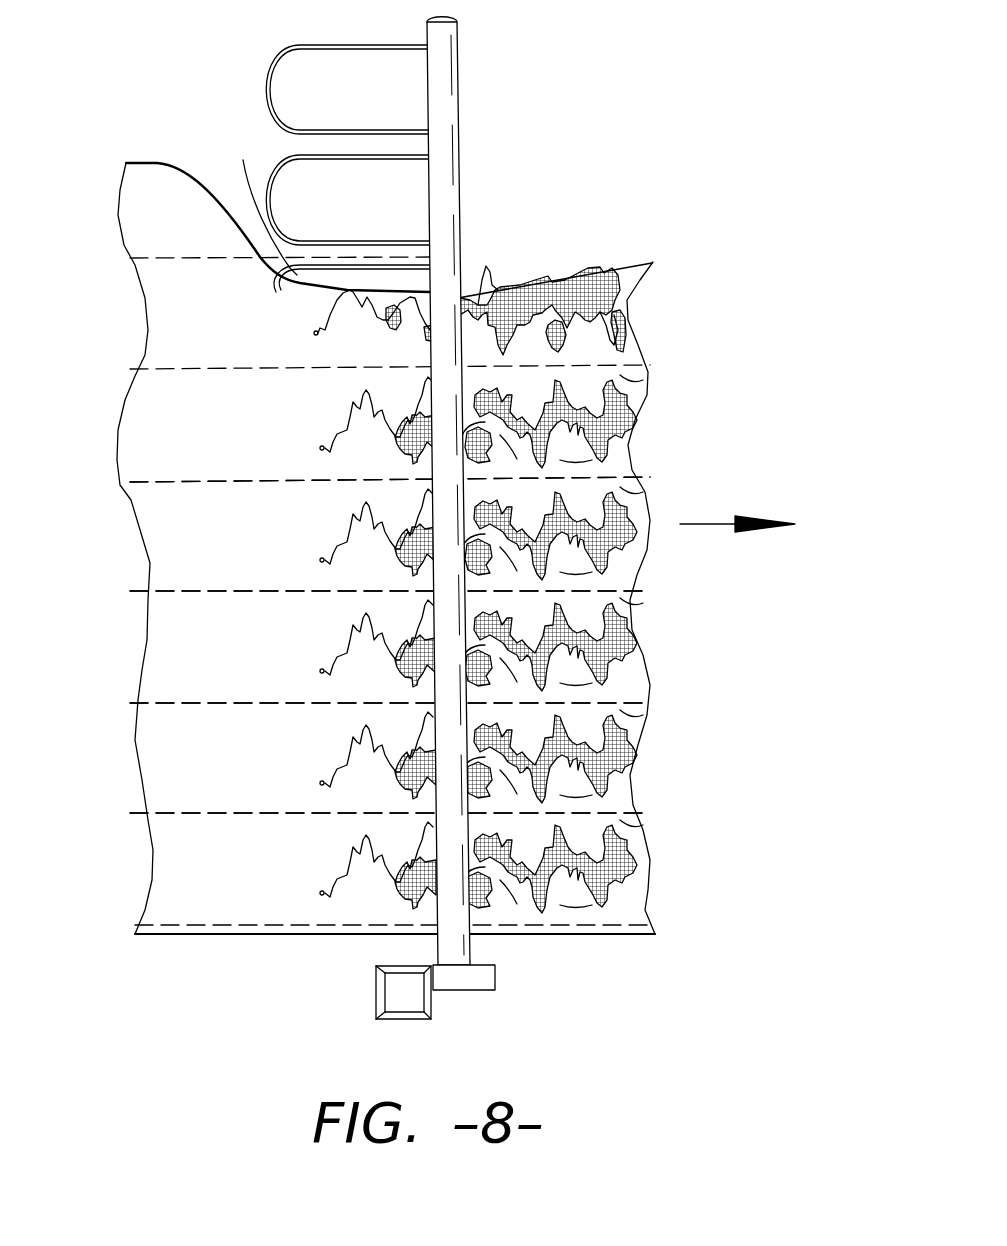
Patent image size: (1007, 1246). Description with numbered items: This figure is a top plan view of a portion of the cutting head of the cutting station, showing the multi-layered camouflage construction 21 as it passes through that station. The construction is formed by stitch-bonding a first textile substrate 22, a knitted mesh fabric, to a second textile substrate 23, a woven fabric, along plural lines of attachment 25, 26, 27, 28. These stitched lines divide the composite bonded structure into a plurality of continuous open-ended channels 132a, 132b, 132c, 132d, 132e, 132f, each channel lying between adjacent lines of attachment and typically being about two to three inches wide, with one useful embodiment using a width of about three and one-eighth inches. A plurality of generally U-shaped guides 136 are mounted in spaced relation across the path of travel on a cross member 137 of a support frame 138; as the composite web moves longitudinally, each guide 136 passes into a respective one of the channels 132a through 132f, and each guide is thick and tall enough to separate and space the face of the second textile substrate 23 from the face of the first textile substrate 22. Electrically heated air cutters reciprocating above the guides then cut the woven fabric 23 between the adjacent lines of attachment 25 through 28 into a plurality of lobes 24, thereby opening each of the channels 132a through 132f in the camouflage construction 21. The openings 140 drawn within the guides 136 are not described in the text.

The multi-layered camouflage construction 21 is at (668, 900).
The first textile substrate 22 is at (592, 275).
The second textile substrate 23 is at (597, 347).
The lobes 24 is at (530, 382).
The line of attachment 25 is at (177, 815).
The line of attachment 26 is at (167, 705).
The line of attachment 27 is at (176, 592).
The line of attachment 28 is at (148, 480).
The channel 132a is at (158, 300).
The channel 132b is at (153, 413).
The channel 132c is at (162, 513).
The channel 132d is at (176, 631).
The channel 132e is at (173, 748).
The channel 132f is at (173, 877).
The U-shaped guide 136 is at (293, 48).
The cross member 137 is at (458, 948).
The support frame 138 is at (421, 1025).
The loop openings 140 is at (312, 112).